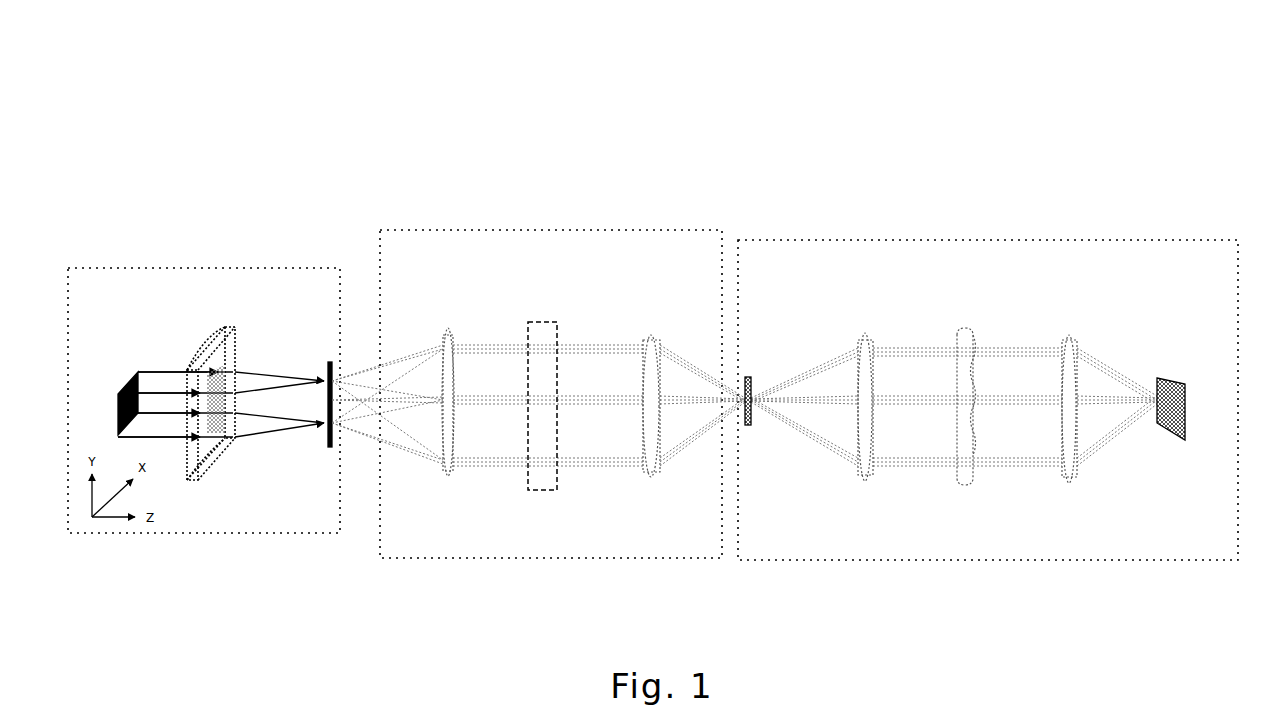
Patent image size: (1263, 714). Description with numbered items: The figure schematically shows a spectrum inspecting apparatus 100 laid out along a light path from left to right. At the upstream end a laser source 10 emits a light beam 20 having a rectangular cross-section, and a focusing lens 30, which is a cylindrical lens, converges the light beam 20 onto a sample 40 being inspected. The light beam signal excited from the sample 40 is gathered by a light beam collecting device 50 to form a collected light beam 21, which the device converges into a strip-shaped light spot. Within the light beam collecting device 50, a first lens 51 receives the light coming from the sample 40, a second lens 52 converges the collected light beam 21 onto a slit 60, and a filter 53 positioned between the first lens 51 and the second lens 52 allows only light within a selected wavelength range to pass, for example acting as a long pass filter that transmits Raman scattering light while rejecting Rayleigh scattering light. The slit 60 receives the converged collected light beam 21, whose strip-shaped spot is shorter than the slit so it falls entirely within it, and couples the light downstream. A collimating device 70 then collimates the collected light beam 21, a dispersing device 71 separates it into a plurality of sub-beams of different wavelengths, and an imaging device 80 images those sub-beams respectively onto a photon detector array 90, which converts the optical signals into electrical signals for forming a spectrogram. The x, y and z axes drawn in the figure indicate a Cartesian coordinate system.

The spectrum inspecting apparatus 100 is at (672, 37).
The laser source 10 is at (130, 375).
The light beam 20 is at (163, 380).
The collected light beam 21 is at (427, 450).
The focusing lens 30 is at (200, 345).
The sample 40 is at (327, 362).
The light beam collecting device 50 is at (468, 230).
The first lens 51 is at (443, 340).
The second lens 52 is at (650, 338).
The filter 53 is at (538, 330).
The slit 60 is at (749, 377).
The collimating device 70 is at (866, 338).
The dispersing device 71 is at (965, 330).
The imaging device 80 is at (1068, 335).
The photon detector array 90 is at (1183, 383).